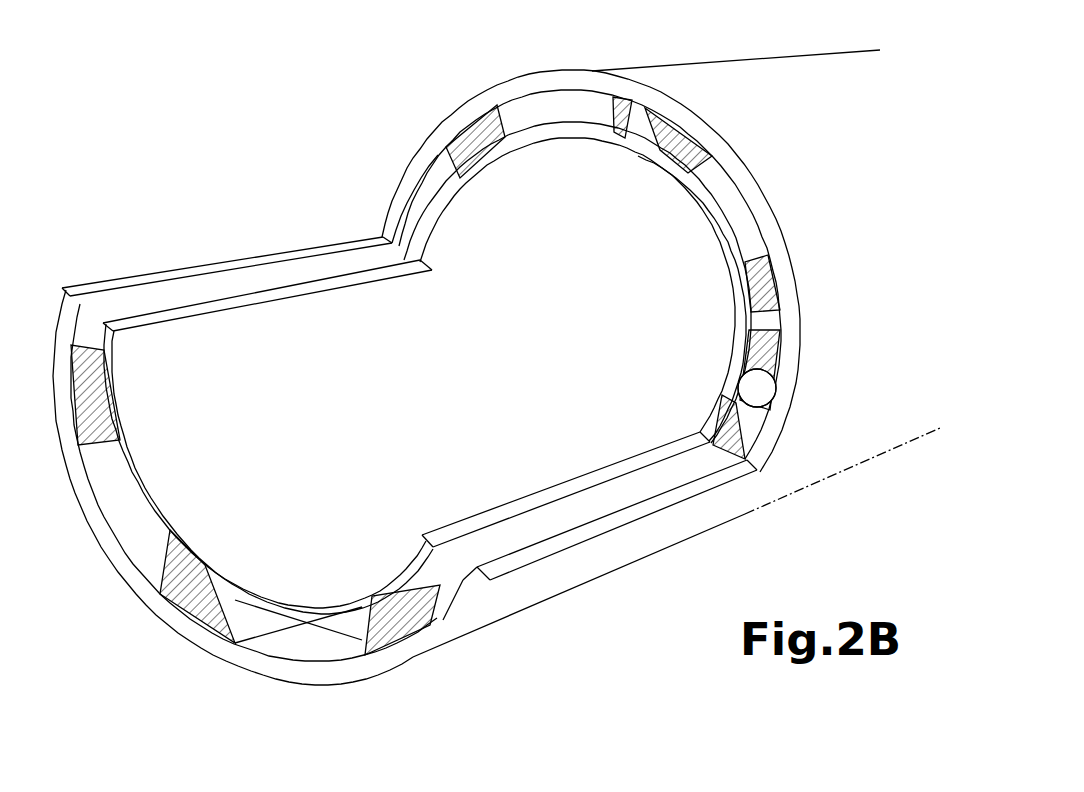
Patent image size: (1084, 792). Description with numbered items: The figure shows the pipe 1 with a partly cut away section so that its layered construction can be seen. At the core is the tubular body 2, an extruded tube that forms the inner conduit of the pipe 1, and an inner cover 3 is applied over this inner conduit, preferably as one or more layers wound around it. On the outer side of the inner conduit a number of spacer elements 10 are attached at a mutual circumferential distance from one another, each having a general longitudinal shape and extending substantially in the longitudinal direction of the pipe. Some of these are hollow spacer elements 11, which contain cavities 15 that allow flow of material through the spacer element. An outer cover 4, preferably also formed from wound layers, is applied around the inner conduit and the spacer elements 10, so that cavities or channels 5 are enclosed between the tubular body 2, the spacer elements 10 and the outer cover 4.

The pipe 1 is at (228, 160).
The tubular body 2 is at (172, 527).
The inner cover 3 is at (77, 298).
The outer cover 4 is at (760, 492).
The cavities or channels 5 is at (738, 228).
The spacer element 10 is at (465, 145).
The hollow spacer element 11 is at (770, 312).
The cavity 15 is at (766, 393).